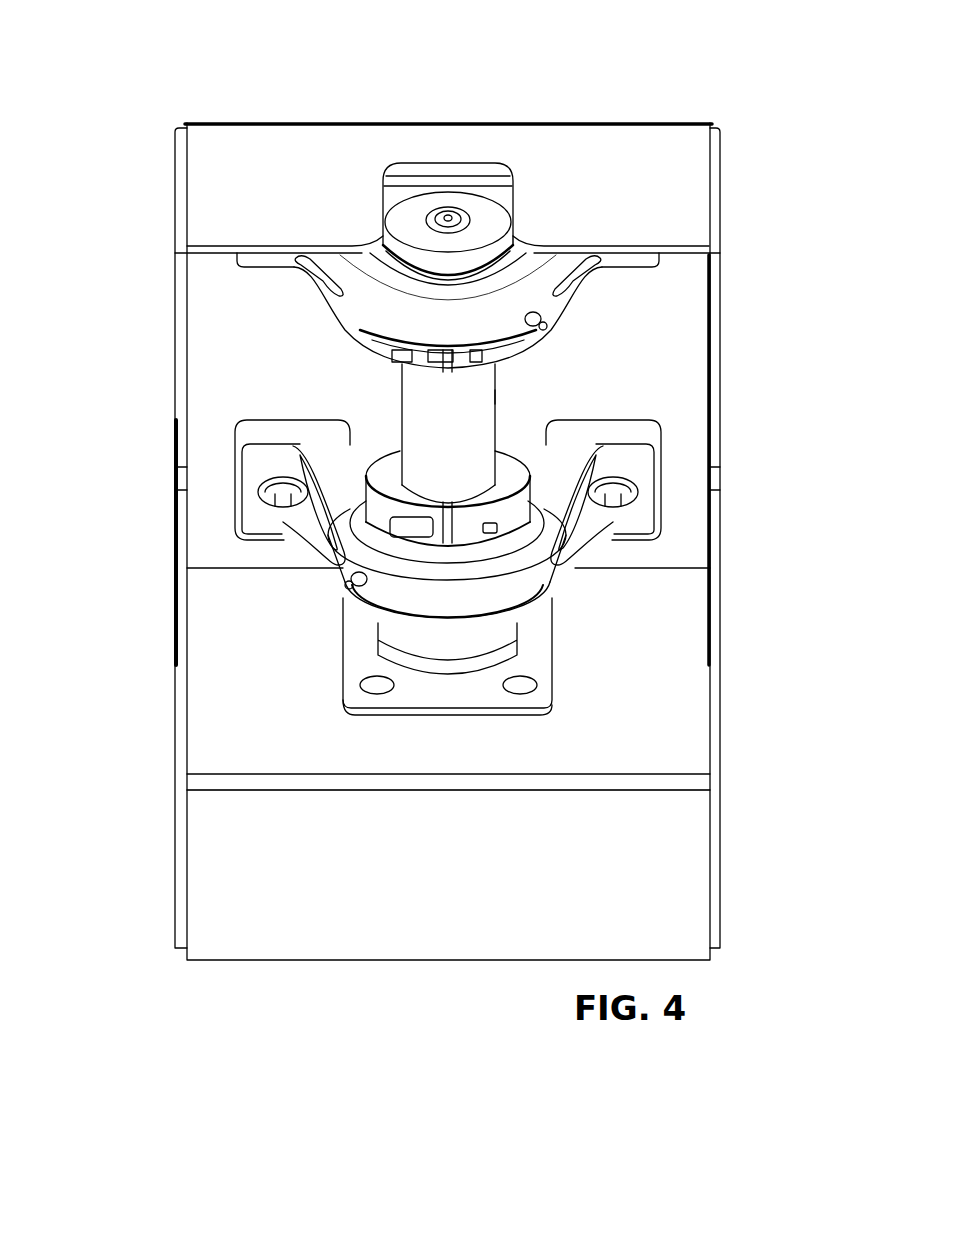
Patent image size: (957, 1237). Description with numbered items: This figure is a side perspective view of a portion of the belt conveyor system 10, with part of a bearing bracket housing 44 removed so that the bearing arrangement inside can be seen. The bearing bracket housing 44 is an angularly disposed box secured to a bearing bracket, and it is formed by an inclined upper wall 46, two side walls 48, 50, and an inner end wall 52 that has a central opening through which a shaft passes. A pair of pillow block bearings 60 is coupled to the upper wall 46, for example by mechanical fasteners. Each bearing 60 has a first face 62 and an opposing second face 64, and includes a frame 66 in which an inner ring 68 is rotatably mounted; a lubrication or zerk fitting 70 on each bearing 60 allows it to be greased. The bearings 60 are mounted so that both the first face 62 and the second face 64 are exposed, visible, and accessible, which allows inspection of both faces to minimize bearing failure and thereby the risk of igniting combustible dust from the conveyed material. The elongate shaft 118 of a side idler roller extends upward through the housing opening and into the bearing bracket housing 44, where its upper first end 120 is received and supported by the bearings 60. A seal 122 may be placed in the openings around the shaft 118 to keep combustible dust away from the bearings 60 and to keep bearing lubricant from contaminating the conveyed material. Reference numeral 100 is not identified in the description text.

The belt conveyor system 10 is at (113, 52).
The bearing bracket housing 44 is at (288, 116).
The inclined upper wall 46 is at (232, 301).
The side wall 48 is at (175, 567).
The side wall 50 is at (720, 525).
The inner end wall 52 is at (242, 753).
The pillow block bearing 60 is at (652, 268).
The first face 62 is at (560, 300).
The second face 64 is at (562, 324).
The frame 66 is at (237, 271).
The inner ring 68 is at (514, 243).
The lubrication fitting 70 is at (548, 330).
The shaft 100 is at (390, 386).
The shaft 118 is at (497, 397).
The first end 120 is at (412, 225).
The seal 122 is at (343, 666).